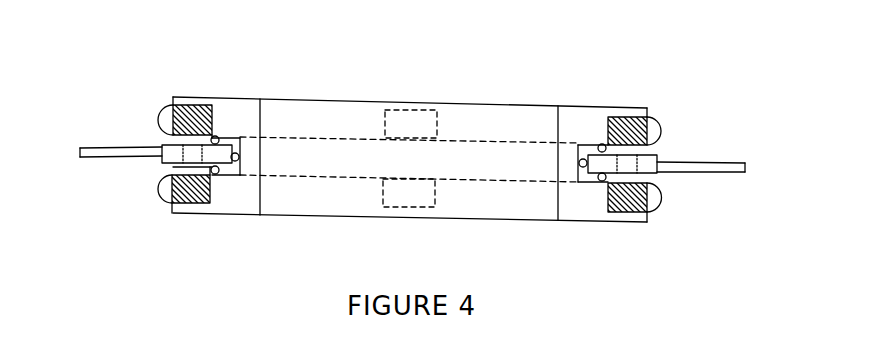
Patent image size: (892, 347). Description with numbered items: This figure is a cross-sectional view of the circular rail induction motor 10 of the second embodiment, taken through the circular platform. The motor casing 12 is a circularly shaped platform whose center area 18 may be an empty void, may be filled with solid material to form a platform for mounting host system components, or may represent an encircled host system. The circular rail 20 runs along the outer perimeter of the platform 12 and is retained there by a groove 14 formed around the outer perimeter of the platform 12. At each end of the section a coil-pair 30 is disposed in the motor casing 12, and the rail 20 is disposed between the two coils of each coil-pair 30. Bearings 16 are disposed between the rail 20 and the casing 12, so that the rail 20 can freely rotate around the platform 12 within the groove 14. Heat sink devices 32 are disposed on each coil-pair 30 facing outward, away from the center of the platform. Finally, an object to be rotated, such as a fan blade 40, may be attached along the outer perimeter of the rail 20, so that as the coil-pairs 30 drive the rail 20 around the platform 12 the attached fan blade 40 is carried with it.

The linear actuator assembly 10 is at (737, 59).
The motor casing 12 is at (226, 103).
The groove 14 is at (232, 172).
The bearings 16 is at (595, 143).
The center area 18 is at (314, 114).
The circular rail 20 is at (656, 169).
The coil-pairs 30 is at (184, 125).
The heat sink devices 32 is at (665, 126).
The fan blade 40 is at (738, 158).